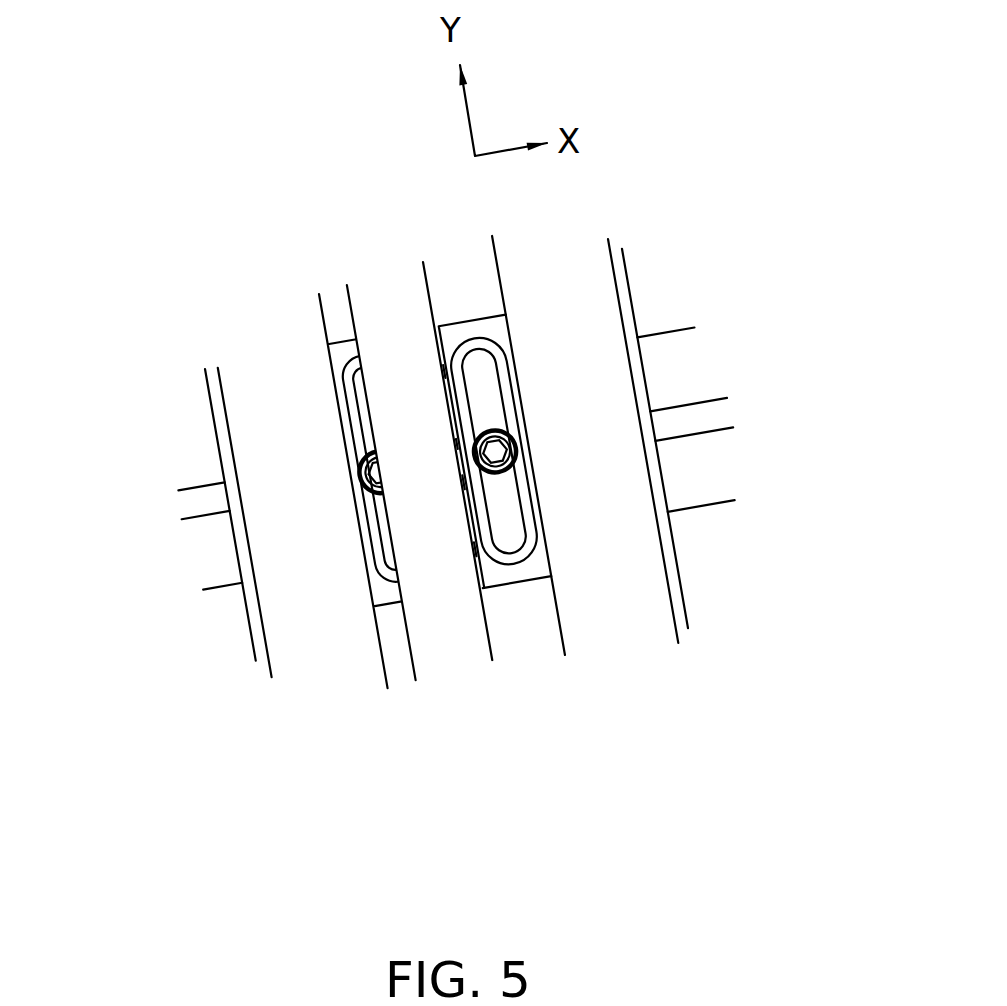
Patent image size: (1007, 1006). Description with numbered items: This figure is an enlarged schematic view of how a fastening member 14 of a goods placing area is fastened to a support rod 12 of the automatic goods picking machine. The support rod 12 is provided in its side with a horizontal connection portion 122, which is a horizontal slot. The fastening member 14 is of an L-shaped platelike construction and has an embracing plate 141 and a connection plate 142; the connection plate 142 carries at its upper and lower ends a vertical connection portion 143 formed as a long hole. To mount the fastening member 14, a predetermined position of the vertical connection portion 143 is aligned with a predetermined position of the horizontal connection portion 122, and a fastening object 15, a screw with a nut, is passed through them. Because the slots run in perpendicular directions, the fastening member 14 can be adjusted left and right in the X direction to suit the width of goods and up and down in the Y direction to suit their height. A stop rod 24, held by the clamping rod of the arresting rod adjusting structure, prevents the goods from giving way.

The support rod 12 is at (212, 548).
The horizontal connection portion 122 is at (203, 497).
The stop rod 24 is at (423, 633).
The fastening member 14 is at (655, 416).
The embracing plate 141 is at (714, 433).
The connection plate 142 is at (570, 302).
The vertical connection portion 143 is at (507, 398).
The fastening object 15 is at (495, 455).